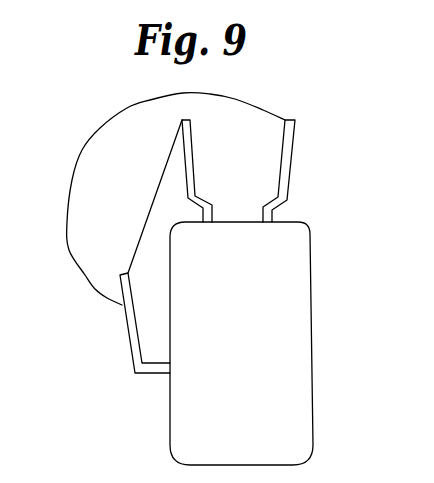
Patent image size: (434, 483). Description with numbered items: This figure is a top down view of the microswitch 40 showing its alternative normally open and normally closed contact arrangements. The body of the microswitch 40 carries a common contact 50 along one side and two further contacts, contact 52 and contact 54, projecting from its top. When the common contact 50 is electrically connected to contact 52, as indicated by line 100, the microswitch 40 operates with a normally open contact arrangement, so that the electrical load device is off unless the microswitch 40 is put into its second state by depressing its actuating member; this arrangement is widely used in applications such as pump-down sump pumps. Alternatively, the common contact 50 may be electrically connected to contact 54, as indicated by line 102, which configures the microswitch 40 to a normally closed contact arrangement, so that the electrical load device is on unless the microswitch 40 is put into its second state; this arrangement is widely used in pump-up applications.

The microswitch 40 is at (283, 283).
The common contact 50 is at (130, 340).
The contact 52 is at (190, 158).
The contact 54 is at (291, 168).
The line 100 is at (150, 188).
The line 102 is at (122, 104).